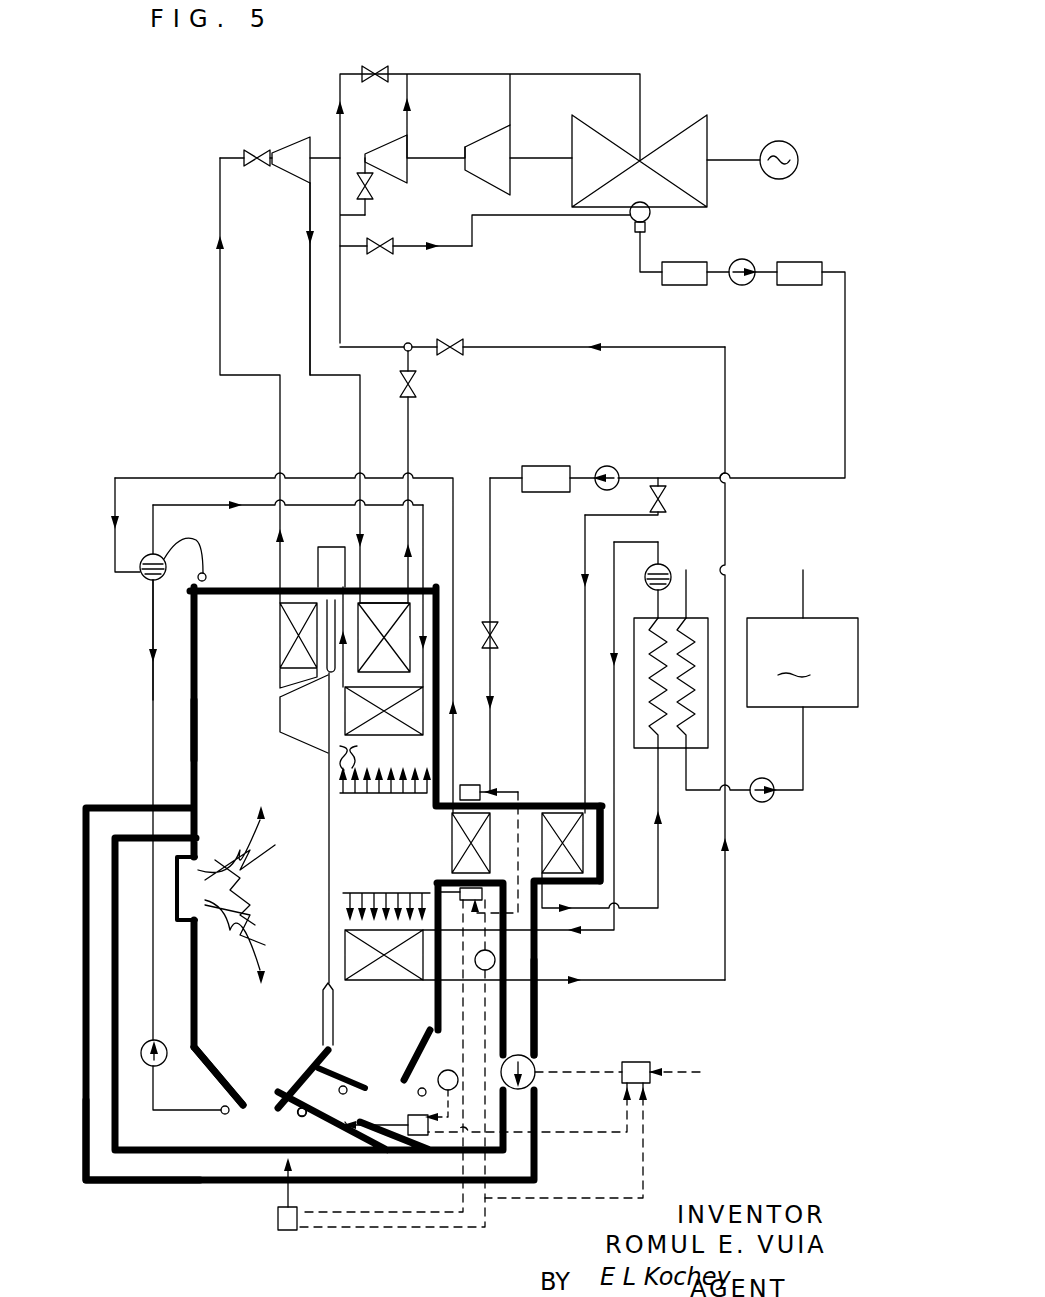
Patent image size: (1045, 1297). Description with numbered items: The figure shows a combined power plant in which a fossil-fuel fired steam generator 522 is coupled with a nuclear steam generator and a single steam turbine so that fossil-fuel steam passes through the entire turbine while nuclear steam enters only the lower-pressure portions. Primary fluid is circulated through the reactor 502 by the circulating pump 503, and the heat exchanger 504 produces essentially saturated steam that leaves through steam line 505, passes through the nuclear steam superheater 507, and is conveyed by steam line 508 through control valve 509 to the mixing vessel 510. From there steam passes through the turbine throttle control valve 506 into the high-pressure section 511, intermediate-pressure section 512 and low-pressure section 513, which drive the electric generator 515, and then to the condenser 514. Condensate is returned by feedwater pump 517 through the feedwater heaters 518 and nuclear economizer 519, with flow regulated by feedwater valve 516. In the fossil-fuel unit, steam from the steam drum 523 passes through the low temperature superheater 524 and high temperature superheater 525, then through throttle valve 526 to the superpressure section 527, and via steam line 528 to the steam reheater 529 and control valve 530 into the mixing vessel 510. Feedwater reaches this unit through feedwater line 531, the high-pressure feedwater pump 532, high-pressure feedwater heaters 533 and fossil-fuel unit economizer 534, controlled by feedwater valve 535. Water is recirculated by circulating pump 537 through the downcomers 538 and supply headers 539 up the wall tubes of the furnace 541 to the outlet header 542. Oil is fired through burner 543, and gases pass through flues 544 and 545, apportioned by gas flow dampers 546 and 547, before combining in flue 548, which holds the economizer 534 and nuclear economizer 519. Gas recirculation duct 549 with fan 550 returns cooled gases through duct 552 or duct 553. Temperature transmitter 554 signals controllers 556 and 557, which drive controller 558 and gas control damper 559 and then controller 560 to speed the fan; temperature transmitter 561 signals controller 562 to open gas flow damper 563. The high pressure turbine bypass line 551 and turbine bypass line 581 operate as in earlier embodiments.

The reactor 502 is at (802, 662).
The circulating pump 503 is at (770, 802).
The heat exchanger 504 is at (670, 750).
The steam line 505 is at (655, 540).
The turbine throttle control valve 506 is at (373, 192).
The nuclear steam superheater 507 is at (347, 982).
The steam line 508 is at (725, 390).
The control valve 509 is at (443, 340).
The mixing vessel 510 is at (420, 312).
The high-pressure section 511 is at (390, 145).
The intermediate-pressure section 512 is at (488, 135).
The low-pressure section 513 is at (597, 130).
The condenser 514 is at (632, 222).
The electric generator 515 is at (787, 141).
The feedwater valve 516 is at (665, 503).
The feedwater pump 517 is at (741, 256).
The feedwater heaters 518 is at (690, 280).
The nuclear economizer 519 is at (572, 798).
The fossil-fuel fired steam generator 522 is at (190, 757).
The steam drum 523 is at (146, 578).
The low temperature superheater 524 is at (420, 705).
The high temperature superheater 525 is at (282, 643).
The throttle valve 526 is at (250, 150).
The superpressure section 527 is at (297, 137).
The steam line 528 is at (328, 375).
The steam reheater 529 is at (380, 603).
The control valve 530 is at (420, 386).
The feedwater line 531 is at (503, 478).
The high-pressure feedwater pump 532 is at (612, 467).
The high-pressure feedwater heaters 533 is at (548, 466).
The fossil-fuel unit economizer 534 is at (452, 840).
The feedwater valve 535 is at (504, 633).
The circulating pump 537 is at (141, 1054).
The downcomers 538 is at (153, 708).
The supply headers 539 is at (297, 1112).
The furnace 541 is at (269, 892).
The outlet header 542 is at (214, 562).
The burner 543 is at (225, 830).
The flue 544 is at (415, 606).
The flue 545 is at (380, 1062).
The gas flow dampers 546 is at (385, 766).
The gas flow dampers 547 is at (345, 922).
The flue 548 is at (600, 810).
The gas recirculation duct 549 is at (525, 1022).
The gas recirculation fan 550 is at (540, 1058).
The high pressure turbine bypass line 551 is at (358, 72).
The duct 552 is at (327, 1108).
The duct 553 is at (100, 1128).
The temperature transmitter 554 is at (495, 960).
The controller 556 is at (470, 785).
The controller 557 is at (460, 890).
The controller 558 is at (278, 1225).
The gas control damper 559 is at (284, 1162).
The controller 560 is at (638, 1062).
The temperature transmitter 561 is at (458, 1086).
The controller 562 is at (412, 1115).
The gas flow damper 563 is at (347, 1125).
The turbine bypass line 581 is at (450, 248).